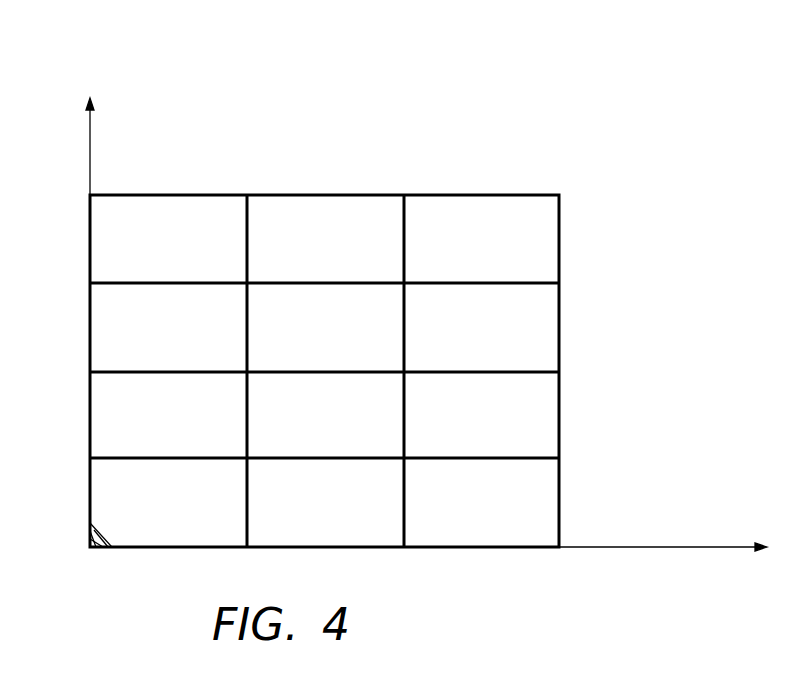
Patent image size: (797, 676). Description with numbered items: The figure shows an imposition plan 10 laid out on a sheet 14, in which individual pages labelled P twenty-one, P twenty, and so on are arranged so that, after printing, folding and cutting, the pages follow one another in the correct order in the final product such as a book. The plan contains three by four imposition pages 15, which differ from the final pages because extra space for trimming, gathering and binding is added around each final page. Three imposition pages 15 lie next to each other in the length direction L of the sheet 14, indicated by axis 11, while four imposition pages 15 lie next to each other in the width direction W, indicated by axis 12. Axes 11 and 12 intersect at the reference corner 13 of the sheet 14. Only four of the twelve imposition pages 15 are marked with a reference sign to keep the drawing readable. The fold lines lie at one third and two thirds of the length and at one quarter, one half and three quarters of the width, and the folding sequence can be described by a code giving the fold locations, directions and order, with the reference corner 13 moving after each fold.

The imposition plan 10 is at (342, 94).
The axis 11 is at (602, 548).
The axis 12 is at (90, 162).
The reference corner 13 is at (88, 548).
The sheet 14 is at (540, 487).
The imposition pages 15 is at (203, 215).